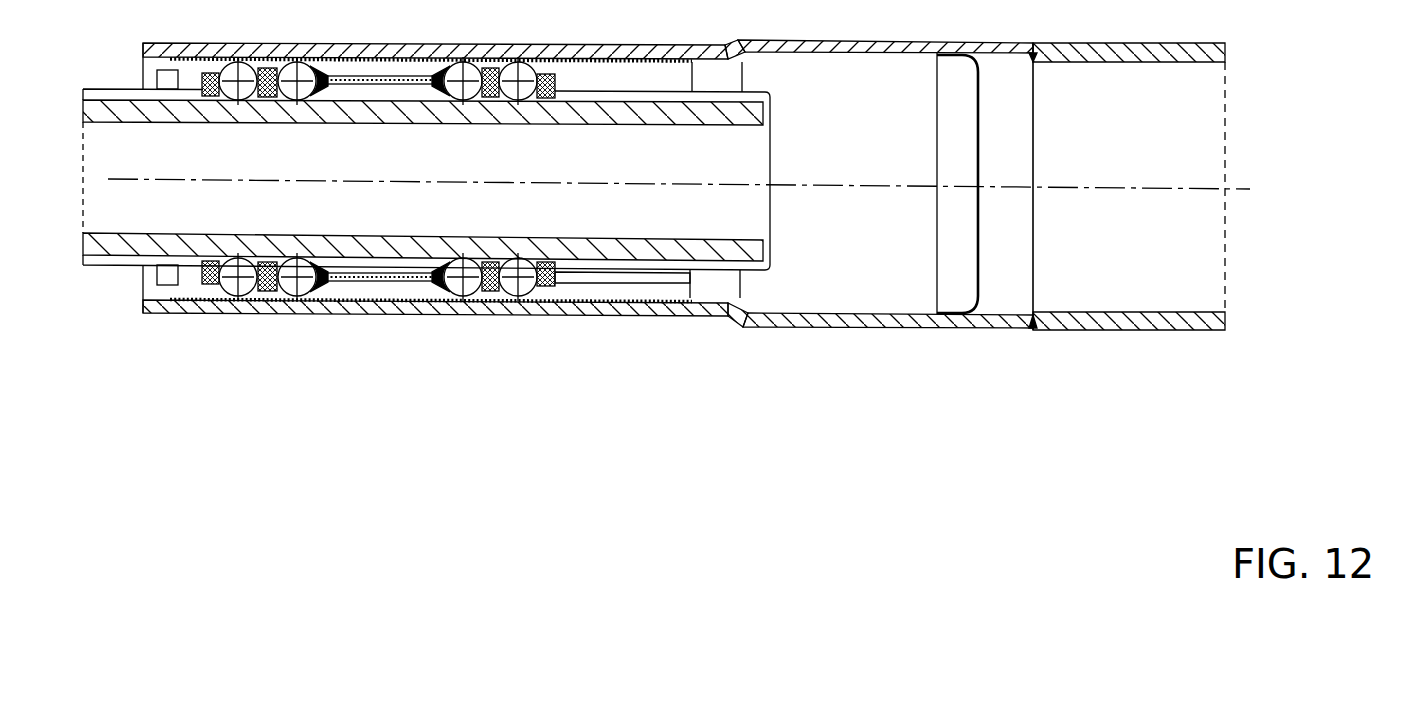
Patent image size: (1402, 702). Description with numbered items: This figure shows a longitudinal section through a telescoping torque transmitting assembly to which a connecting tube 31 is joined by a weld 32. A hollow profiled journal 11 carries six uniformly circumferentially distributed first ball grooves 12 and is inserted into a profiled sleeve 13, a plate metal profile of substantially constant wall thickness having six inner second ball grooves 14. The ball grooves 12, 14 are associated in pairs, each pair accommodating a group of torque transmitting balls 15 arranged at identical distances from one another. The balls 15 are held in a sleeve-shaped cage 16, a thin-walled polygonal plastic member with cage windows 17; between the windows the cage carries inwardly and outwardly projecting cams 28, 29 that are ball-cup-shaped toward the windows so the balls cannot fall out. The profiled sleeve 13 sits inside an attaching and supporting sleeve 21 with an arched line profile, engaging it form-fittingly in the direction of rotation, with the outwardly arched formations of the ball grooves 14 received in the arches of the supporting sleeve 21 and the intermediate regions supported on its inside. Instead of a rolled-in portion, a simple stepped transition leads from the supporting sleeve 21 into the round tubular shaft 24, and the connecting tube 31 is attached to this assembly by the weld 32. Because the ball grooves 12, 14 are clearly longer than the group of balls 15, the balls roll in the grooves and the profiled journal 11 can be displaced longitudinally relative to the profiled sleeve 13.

The profiled journal 11 is at (103, 243).
The first ball grooves 12 is at (120, 262).
The profiled sleeve 13 is at (609, 305).
The second ball grooves 14 is at (649, 290).
The torque transmitting ball 15 is at (243, 285).
The sleeve-shaped cage 16 is at (368, 281).
The cage windows 17 is at (290, 283).
The attaching and supporting sleeve 21 is at (705, 310).
The tubular shaft 24 is at (852, 318).
The inwardly projecting cam 28 is at (547, 292).
The outwardly projecting cam 29 is at (486, 296).
The connecting tube 31 is at (1117, 331).
The weld 32 is at (1032, 330).